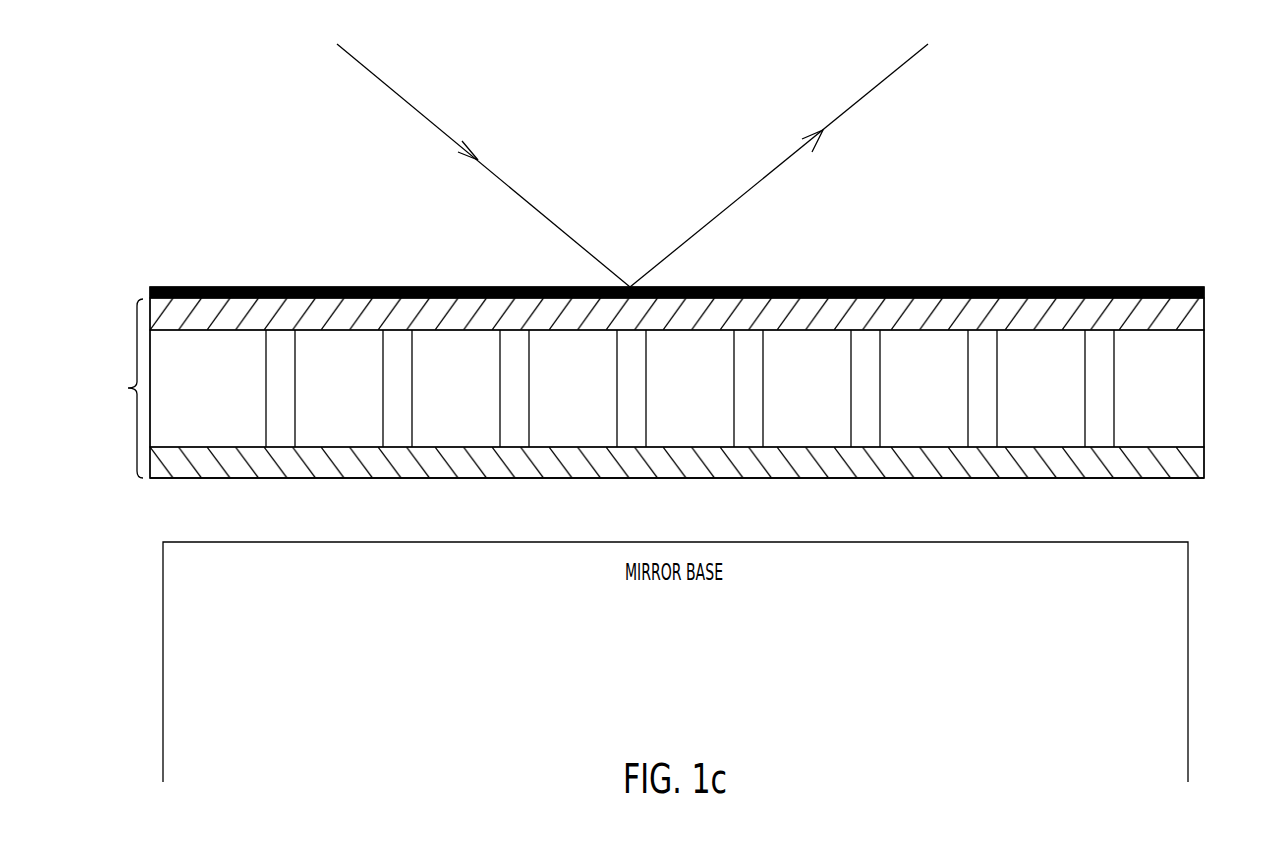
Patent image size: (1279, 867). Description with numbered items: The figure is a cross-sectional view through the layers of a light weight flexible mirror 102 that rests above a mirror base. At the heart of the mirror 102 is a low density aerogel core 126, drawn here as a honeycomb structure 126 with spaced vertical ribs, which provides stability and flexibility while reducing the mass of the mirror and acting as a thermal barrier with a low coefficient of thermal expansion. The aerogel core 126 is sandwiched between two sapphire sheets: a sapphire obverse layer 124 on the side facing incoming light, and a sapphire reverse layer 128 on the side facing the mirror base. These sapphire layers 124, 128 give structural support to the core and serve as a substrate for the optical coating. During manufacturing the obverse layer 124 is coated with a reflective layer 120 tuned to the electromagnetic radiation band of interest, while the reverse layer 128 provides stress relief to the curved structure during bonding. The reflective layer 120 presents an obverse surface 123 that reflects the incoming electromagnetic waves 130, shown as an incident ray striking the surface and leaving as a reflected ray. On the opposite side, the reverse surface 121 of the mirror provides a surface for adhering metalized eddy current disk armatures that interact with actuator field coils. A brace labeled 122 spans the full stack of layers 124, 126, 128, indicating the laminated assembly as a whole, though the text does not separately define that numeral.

The mirror 102 is at (644, 83).
The incoming electromagnetic waves 130 is at (890, 78).
The reflective layer 120 is at (1212, 290).
The reverse surface 121 is at (1020, 486).
The mirror substrate assembly 122 is at (123, 388).
The obverse surface 123 is at (1019, 285).
The sapphire obverse layer 124 is at (1212, 318).
The aerogel core 126 is at (1212, 385).
The sapphire reverse layer 128 is at (1211, 466).